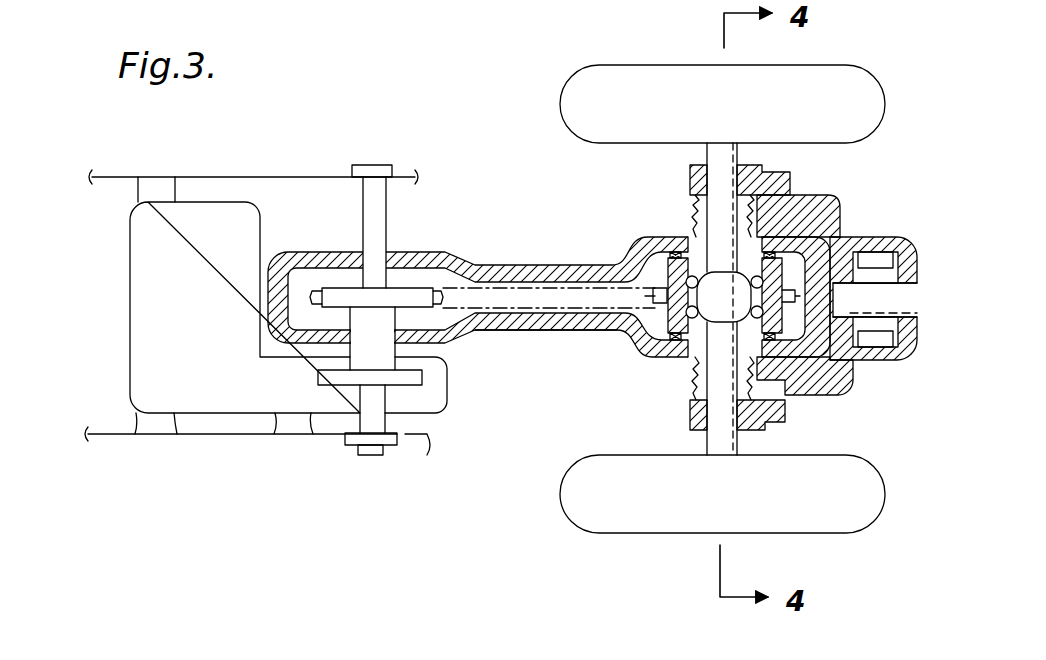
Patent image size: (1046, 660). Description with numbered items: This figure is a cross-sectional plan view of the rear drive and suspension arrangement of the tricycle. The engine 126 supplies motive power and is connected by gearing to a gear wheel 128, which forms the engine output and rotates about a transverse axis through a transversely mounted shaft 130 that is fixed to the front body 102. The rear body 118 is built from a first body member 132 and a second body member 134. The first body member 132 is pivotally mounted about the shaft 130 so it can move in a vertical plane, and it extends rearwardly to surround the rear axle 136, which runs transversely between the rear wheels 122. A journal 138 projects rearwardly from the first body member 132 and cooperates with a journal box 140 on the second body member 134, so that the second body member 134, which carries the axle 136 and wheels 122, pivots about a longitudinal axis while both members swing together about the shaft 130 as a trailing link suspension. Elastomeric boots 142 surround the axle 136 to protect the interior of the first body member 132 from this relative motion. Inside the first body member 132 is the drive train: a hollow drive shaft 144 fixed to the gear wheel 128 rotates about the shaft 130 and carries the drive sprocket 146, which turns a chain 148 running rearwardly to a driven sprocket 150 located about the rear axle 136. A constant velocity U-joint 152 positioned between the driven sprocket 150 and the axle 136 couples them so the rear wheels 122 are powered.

The front body 102 is at (236, 170).
The rear body 118 is at (518, 327).
The rear wheels 122 is at (876, 100).
The engine 126 is at (192, 397).
The gear wheel 128 is at (333, 380).
The shaft 130 is at (380, 207).
The first body member 132 is at (508, 270).
The second body member 134 is at (848, 383).
The rear axle 136 is at (707, 415).
The journal 138 is at (907, 300).
The journal box 140 is at (864, 240).
The elastomeric boots 142 is at (693, 224).
The hollow drive shaft 144 is at (383, 352).
The drive sprocket 146 is at (330, 290).
The chain 148 is at (572, 295).
The driven sprocket 150 is at (653, 302).
The U-joint 152 is at (748, 262).